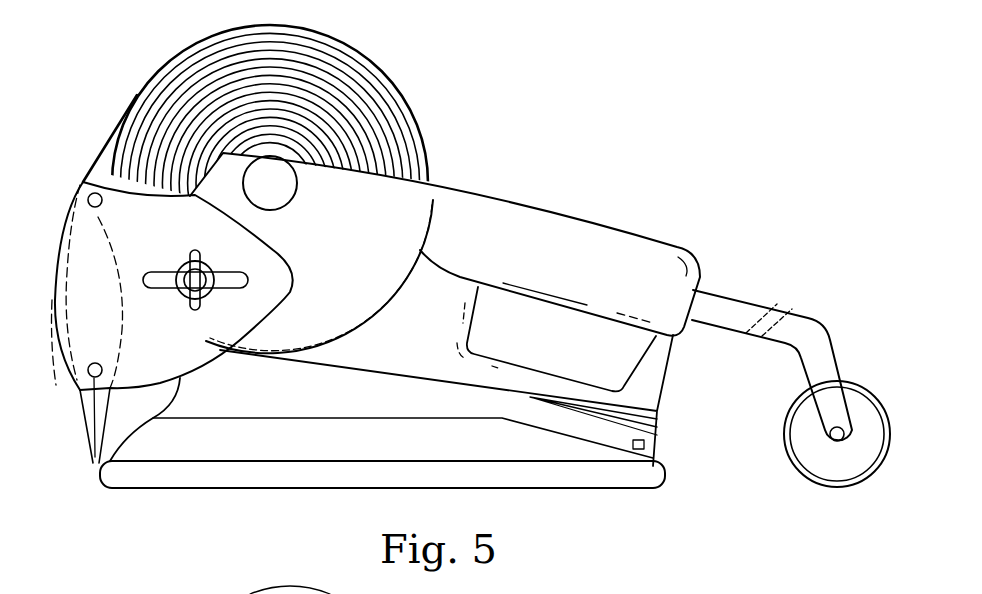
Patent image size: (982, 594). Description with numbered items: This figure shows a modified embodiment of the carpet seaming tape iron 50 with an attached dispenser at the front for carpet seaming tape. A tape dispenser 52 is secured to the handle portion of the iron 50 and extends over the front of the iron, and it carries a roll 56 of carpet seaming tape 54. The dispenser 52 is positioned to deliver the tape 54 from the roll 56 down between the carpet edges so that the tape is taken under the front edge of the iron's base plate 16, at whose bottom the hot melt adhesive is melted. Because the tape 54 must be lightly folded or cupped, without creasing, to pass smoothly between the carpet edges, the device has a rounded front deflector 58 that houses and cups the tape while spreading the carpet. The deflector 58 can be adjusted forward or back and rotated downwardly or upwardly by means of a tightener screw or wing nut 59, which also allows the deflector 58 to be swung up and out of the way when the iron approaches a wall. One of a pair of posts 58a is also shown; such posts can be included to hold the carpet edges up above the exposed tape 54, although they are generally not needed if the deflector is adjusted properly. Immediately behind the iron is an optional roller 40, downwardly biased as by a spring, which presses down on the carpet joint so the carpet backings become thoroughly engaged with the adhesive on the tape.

The base plate 16 is at (295, 489).
The roller 40 is at (870, 393).
The iron 50 is at (674, 129).
The tape dispenser 52 is at (410, 190).
The carpet seaming tape 54 is at (107, 137).
The roll 56 is at (364, 56).
The rounded front deflector 58 is at (80, 243).
The post 58a is at (94, 463).
The wing nut 59 is at (180, 292).